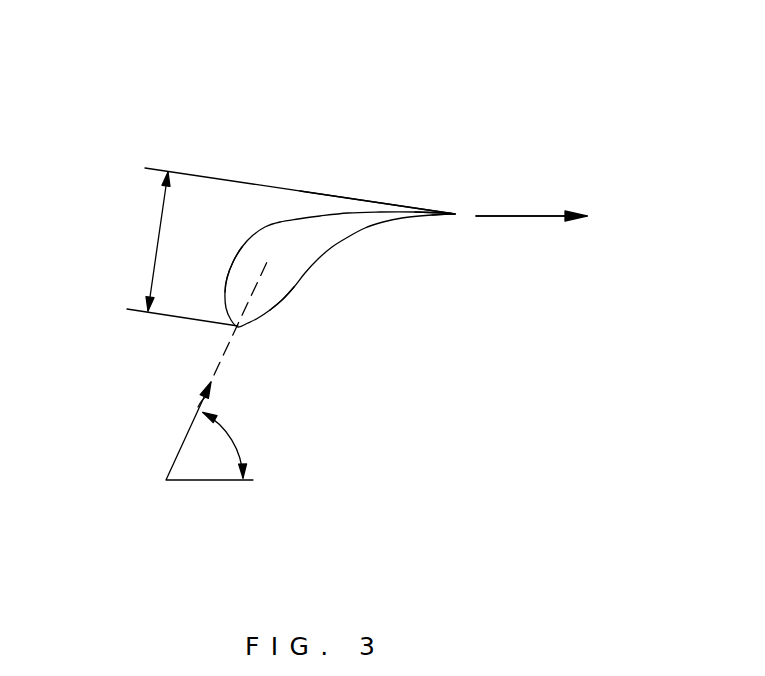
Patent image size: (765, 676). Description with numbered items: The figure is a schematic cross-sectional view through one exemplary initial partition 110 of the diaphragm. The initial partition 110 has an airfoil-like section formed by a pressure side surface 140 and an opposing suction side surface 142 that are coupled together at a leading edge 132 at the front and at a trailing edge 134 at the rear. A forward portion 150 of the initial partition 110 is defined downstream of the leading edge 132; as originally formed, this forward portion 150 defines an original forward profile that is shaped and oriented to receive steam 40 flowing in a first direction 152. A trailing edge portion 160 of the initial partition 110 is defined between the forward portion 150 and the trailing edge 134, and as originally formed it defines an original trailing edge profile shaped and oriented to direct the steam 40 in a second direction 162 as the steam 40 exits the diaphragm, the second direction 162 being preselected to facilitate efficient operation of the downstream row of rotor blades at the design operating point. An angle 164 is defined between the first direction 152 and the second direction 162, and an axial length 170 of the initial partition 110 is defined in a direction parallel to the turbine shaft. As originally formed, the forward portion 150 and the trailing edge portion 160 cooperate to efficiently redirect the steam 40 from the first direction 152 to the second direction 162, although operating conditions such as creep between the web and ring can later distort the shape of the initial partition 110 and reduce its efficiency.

The initial partition 110 is at (180, 103).
The pressure side surface 140 is at (296, 290).
The suction side surface 142 is at (267, 227).
The forward portion 150 is at (283, 307).
The leading edge 132 is at (244, 334).
The trailing edge 134 is at (458, 210).
The trailing edge portion 160 is at (400, 204).
The second direction 162 is at (502, 217).
The steam 40 is at (533, 214).
The axial length 170 is at (157, 244).
The first direction 152 is at (205, 407).
The angle 164 is at (237, 440).